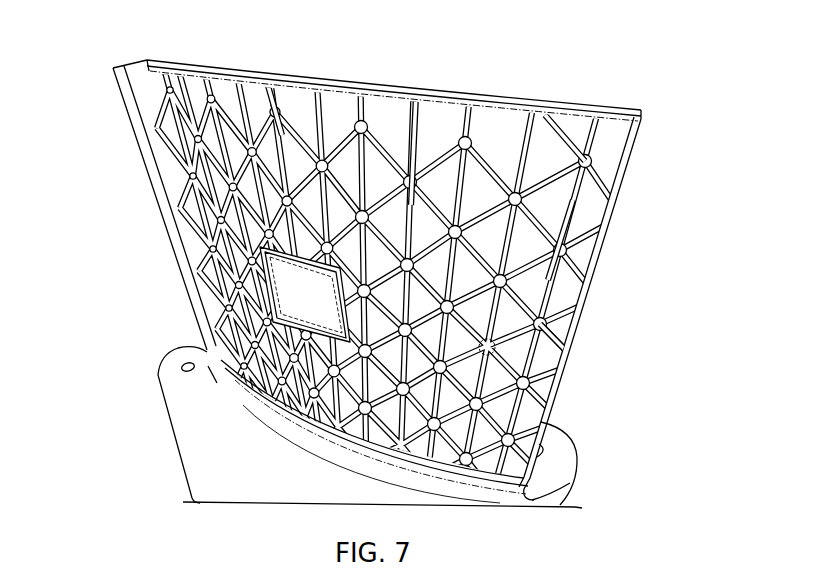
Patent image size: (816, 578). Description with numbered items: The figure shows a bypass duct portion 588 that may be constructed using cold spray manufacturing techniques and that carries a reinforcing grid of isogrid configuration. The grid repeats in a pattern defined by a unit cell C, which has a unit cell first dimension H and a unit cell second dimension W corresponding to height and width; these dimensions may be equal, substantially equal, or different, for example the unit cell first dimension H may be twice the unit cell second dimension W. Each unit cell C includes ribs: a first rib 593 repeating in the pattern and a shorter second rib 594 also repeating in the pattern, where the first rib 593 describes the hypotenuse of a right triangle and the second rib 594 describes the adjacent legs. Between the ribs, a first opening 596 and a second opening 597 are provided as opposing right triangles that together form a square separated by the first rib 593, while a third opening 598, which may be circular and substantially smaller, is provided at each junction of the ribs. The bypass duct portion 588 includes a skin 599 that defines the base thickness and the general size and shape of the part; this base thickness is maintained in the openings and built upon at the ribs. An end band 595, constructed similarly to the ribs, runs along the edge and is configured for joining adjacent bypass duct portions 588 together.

The bypass duct portion 588 is at (120, 36).
The first rib 593 is at (270, 100).
The second rib 594 is at (418, 152).
The end band 595 is at (193, 278).
The first opening 596 is at (642, 117).
The second opening 597 is at (557, 227).
The third opening 598 is at (559, 337).
The skin 599 is at (557, 383).
The unit cell second dimension W is at (413, 190).
The unit cell first dimension H is at (407, 265).
The unit cell C is at (430, 185).